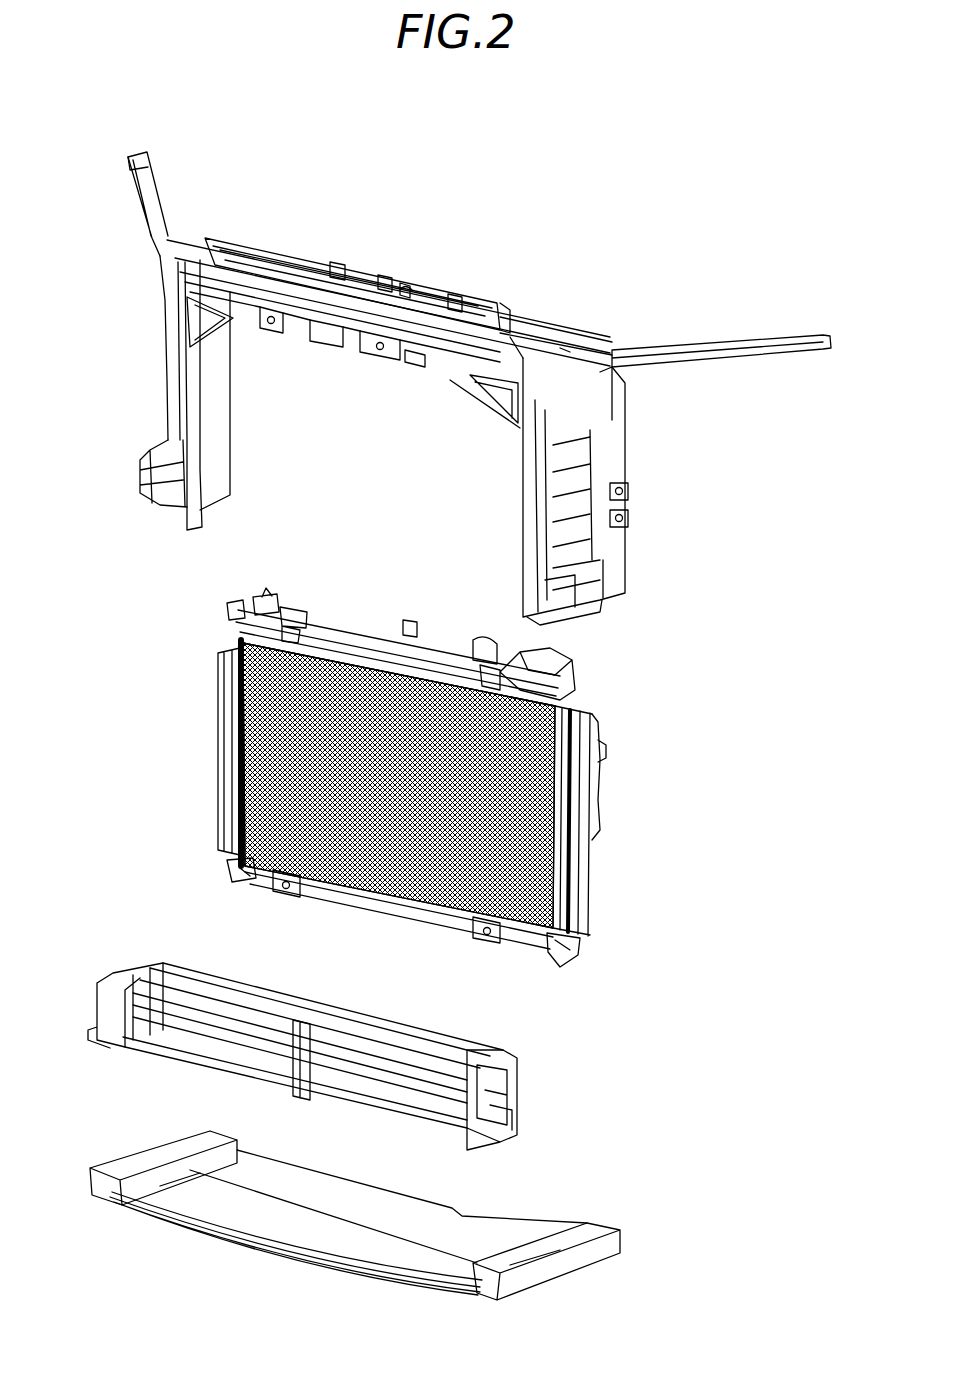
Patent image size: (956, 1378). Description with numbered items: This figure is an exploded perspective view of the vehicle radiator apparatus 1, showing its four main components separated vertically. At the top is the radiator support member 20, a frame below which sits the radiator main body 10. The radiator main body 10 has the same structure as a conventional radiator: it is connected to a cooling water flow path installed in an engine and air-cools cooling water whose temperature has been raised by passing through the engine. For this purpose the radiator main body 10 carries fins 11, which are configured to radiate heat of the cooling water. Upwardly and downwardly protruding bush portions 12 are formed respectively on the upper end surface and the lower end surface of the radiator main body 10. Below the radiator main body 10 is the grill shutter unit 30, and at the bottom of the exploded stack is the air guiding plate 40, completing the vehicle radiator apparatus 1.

The vehicle radiator apparatus 1 is at (467, 203).
The radiator main body 10 is at (587, 700).
The fins 11 is at (275, 763).
The bush portions 12 is at (270, 598).
The radiator support member 20 is at (458, 285).
The grill shutter unit 30 is at (430, 1042).
The air guiding plate 40 is at (430, 1208).